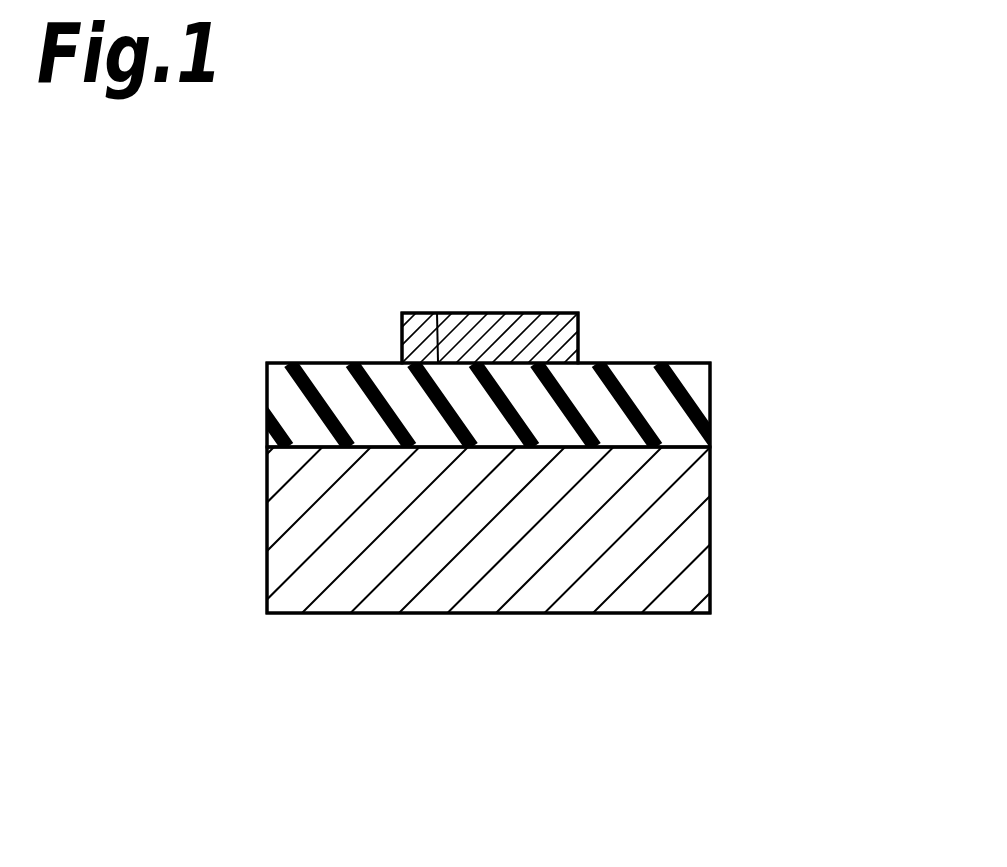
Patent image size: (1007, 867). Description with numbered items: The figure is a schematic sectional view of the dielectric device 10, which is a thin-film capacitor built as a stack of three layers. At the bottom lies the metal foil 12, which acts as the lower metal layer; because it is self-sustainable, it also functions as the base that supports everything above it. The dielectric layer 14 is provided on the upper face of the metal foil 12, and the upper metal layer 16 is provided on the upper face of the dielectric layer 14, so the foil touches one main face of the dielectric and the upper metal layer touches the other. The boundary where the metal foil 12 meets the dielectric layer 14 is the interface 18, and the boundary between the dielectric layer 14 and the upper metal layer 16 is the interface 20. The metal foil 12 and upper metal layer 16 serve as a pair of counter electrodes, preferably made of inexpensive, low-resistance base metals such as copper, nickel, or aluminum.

The dielectric device 10 is at (720, 224).
The metal foil 12 is at (687, 532).
The dielectric layer 14 is at (688, 397).
The upper metal layer 16 is at (557, 322).
The interface between the metal foil and dielectric layer 18 is at (490, 447).
The interface between the dielectric layer and upper metal layer 20 is at (437, 313).